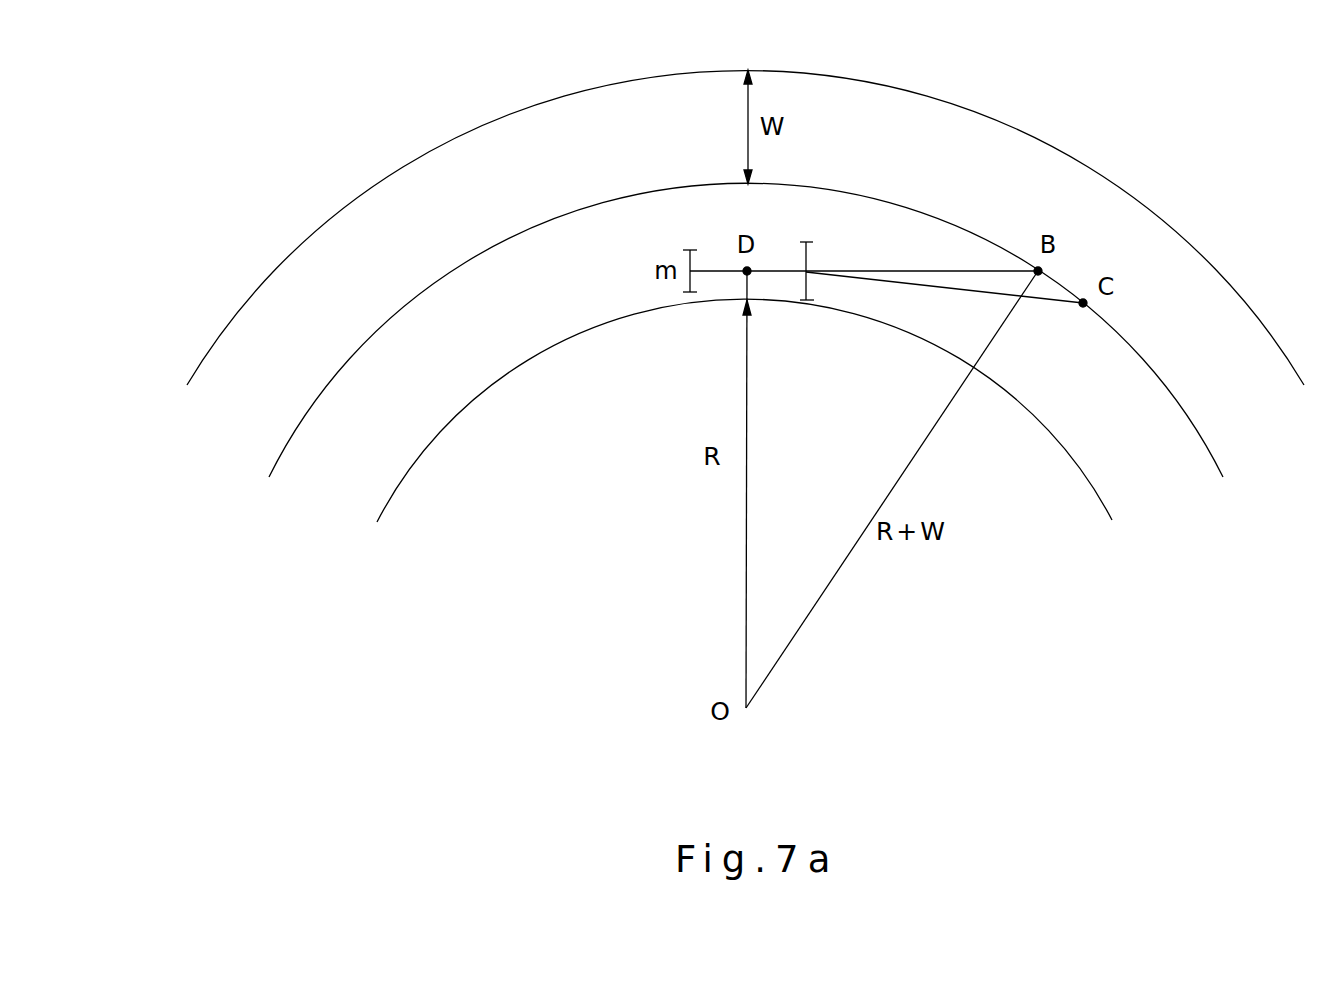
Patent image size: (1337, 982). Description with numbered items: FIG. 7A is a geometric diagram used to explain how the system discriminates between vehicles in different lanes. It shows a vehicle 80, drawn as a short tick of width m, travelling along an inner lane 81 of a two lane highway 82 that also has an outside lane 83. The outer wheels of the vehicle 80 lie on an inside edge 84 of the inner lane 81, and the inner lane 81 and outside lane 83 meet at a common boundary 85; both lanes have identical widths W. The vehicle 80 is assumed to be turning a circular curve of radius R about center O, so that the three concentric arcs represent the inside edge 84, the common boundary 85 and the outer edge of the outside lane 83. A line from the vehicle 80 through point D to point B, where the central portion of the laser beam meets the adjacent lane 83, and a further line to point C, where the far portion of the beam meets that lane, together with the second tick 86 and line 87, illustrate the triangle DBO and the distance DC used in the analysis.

The vehicle 80 is at (689, 252).
The inner lane 81 is at (1088, 418).
The two lane highway 82 is at (1107, 530).
The outside lane 83 is at (1232, 367).
The inside edge 84 is at (552, 350).
The common boundary 85 is at (368, 343).
The second reference mark 86 is at (806, 240).
The chord line 87 is at (812, 300).